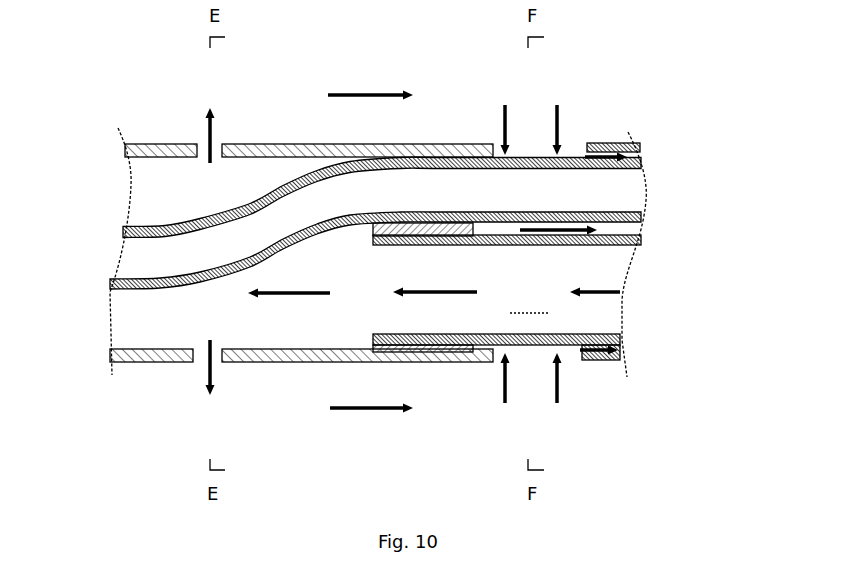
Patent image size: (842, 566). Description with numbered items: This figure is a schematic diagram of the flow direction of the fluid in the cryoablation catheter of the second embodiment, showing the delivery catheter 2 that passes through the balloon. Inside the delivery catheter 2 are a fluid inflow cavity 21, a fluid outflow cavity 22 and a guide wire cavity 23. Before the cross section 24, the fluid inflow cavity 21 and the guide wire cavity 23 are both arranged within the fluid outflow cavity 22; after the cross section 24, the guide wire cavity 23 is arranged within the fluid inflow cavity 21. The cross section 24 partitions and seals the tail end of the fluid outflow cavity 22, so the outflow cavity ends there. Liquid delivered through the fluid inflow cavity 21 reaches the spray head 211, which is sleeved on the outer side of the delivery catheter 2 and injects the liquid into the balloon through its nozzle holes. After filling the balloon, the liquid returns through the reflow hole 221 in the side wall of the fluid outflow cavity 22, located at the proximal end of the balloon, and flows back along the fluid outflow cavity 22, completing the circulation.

The delivery catheter 2 is at (740, 138).
The fluid inflow cavity 21 is at (155, 189).
The spray head 211 is at (190, 145).
The fluid outflow cavity 22 is at (632, 133).
The reflow hole 221 is at (582, 138).
The guide wire cavity 23 is at (155, 260).
The cross section 24 is at (470, 342).